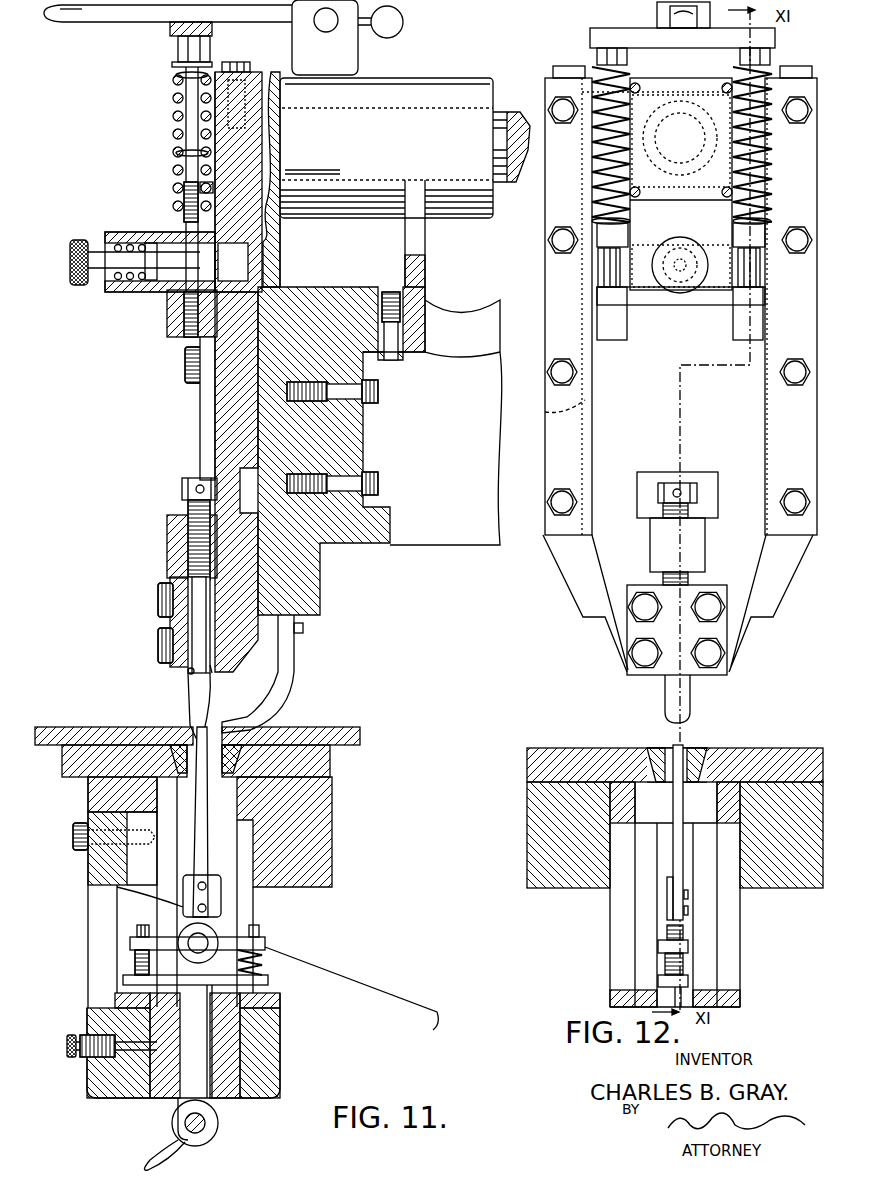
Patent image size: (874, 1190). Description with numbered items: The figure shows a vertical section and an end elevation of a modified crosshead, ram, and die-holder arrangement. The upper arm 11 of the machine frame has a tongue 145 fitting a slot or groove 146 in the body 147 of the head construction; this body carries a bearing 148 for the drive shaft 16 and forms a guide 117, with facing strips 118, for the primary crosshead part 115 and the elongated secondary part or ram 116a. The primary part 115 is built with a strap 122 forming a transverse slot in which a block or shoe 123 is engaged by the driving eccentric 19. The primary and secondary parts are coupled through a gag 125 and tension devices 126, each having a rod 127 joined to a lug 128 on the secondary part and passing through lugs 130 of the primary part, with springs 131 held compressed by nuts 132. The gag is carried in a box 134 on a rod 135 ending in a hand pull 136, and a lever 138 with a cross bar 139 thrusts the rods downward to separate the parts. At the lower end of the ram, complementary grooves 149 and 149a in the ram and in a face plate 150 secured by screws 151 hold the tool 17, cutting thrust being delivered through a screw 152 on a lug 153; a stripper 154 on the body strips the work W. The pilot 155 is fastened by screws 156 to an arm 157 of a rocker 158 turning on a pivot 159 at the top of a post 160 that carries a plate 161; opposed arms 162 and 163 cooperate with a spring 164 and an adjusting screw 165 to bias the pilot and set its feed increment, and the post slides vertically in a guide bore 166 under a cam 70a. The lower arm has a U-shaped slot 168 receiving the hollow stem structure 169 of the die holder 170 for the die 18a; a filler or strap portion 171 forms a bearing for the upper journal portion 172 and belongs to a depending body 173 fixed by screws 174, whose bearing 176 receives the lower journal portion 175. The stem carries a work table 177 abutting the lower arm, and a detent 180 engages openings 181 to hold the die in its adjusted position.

In FIG. 11, the upper arm 11 is at (470, 535).
In FIG. 11, the drive shaft 16 is at (506, 112).
In FIG. 11, the tool 17 is at (190, 695).
In FIG. 11, the die 18a is at (235, 755).
In FIG. 12, the die 18a is at (693, 752).
In FIG. 12, the driving eccentric 19 is at (672, 116).
In FIG. 11, the cam 70a is at (219, 1125).
In FIG. 11, the primary crosshead part 115 is at (235, 225).
In FIG. 12, the primary crosshead part 115 is at (668, 218).
In FIG. 11, the secondary part or ram 116a is at (225, 420).
In FIG. 12, the secondary part or ram 116a is at (590, 545).
In FIG. 11, the guide 117 is at (272, 236).
In FIG. 12, the guide 117 is at (545, 412).
In FIG. 12, the facing strips 118 is at (552, 305).
In FIG. 11, the strap 122 is at (240, 70).
In FIG. 12, the block or shoe 123 is at (690, 98).
In FIG. 11, the gag 125 is at (237, 262).
In FIG. 11, the tension devices 126 is at (176, 153).
In FIG. 11, the rod 127 is at (186, 126).
In FIG. 12, the rod 127 is at (605, 268).
In FIG. 12, the lug 128 is at (735, 325).
In FIG. 11, the lugs 130 is at (172, 220).
In FIG. 12, the lugs 130 is at (600, 195).
In FIG. 11, the springs 131 is at (178, 78).
In FIG. 12, the springs 131 is at (600, 196).
In FIG. 11, the nuts 132 is at (176, 50).
In FIG. 11, the box 134 is at (142, 292).
In FIG. 12, the box 134 is at (715, 292).
In FIG. 11, the rod 135 is at (100, 240).
In FIG. 11, the hand pull 136 is at (82, 275).
In FIG. 11, the lever 138 is at (121, 18).
In FIG. 12, the lever 138 is at (657, 12).
In FIG. 12, the cross bar 139 is at (600, 33).
In FIG. 11, the tongue 145 is at (357, 430).
In FIG. 11, the slot or groove 146 is at (320, 445).
In FIG. 11, the body 147 is at (322, 588).
In FIG. 11, the bearing 148 is at (408, 92).
In FIG. 11, the vertical groove 149 is at (214, 670).
In FIG. 11, the vertical groove 149a is at (188, 673).
In FIG. 11, the face plate 150 is at (180, 580).
In FIG. 12, the face plate 150 is at (668, 672).
In FIG. 11, the screws 151 is at (160, 648).
In FIG. 12, the screws 151 is at (640, 650).
In FIG. 11, the screw 152 is at (182, 510).
In FIG. 11, the lug 153 is at (170, 545).
In FIG. 12, the lug 153 is at (705, 545).
In FIG. 11, the stripper 154 is at (285, 683).
In FIG. 11, the pilot 155 is at (204, 812).
In FIG. 12, the pilot 155 is at (680, 806).
In FIG. 11, the screws 156 is at (206, 882).
In FIG. 12, the screws 156 is at (689, 898).
In FIG. 11, the arm 157 is at (218, 908).
In FIG. 12, the arm 157 is at (670, 905).
In FIG. 11, the rocker 158 is at (215, 935).
In FIG. 11, the pivot 159 is at (197, 950).
In FIG. 11, the post or slide 160 is at (205, 1040).
In FIG. 11, the plate 161 is at (268, 980).
In FIG. 12, the plate 161 is at (689, 982).
In FIG. 11, the arm 162 is at (135, 942).
In FIG. 12, the arm 162 is at (688, 945).
In FIG. 11, the arm 163 is at (265, 940).
In FIG. 11, the spring 164 is at (262, 958).
In FIG. 11, the adjusting screw 165 is at (136, 962).
In FIG. 12, the adjusting screw 165 is at (684, 965).
In FIG. 11, the guide bore 166 is at (156, 1100).
In FIG. 11, the U-shaped slot 168 is at (255, 838).
In FIG. 11, the stem structure 169 is at (312, 790).
In FIG. 12, the stem structure 169 is at (735, 812).
In FIG. 11, the die holder 170 is at (90, 763).
In FIG. 12, the die holder 170 is at (615, 855).
In FIG. 11, the filler or strap portion 171 is at (95, 865).
In FIG. 11, the upper journal portion 172 is at (150, 790).
In FIG. 11, the depending body 173 is at (90, 812).
In FIG. 11, the screws 174 is at (78, 837).
In FIG. 11, the journal portion 175 is at (95, 1015).
In FIG. 11, the bearing 176 is at (240, 1063).
In FIG. 11, the work table 177 is at (310, 742).
In FIG. 12, the work table 177 is at (635, 750).
In FIG. 11, the detent 180 is at (90, 1057).
In FIG. 11, the openings 181 is at (240, 1048).
In FIG. 11, the work W is at (65, 735).